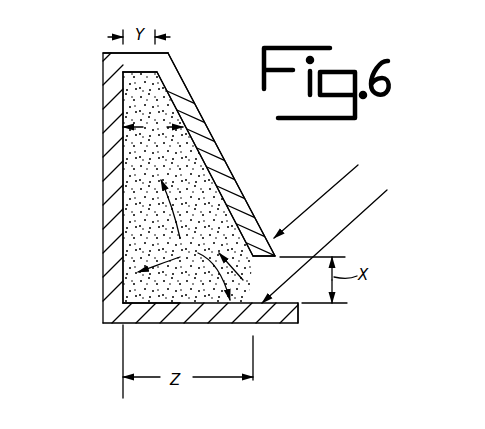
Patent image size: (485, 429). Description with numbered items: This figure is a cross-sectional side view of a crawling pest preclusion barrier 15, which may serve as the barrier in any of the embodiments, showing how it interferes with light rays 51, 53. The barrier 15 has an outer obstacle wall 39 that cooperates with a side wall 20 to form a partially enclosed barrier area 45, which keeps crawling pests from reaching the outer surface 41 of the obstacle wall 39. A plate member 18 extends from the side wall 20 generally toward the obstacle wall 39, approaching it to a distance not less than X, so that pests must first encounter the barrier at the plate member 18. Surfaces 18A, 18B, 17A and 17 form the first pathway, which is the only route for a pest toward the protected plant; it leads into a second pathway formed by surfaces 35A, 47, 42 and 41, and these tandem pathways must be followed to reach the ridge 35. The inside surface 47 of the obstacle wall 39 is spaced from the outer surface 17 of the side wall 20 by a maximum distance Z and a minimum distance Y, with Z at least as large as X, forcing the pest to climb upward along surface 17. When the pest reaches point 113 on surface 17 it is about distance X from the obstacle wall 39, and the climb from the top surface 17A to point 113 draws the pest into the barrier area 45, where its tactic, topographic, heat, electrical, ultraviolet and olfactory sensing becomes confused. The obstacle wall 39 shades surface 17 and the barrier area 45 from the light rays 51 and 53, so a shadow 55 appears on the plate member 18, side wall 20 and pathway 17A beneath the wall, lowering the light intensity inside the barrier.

The barrier 15 is at (194, 193).
The side wall 20 is at (103, 189).
The ridge 35 is at (168, 53).
The surface 35A is at (147, 76).
The outer obstacle wall 39 is at (197, 107).
The outer surface 41 is at (226, 163).
The inside surface 47 is at (225, 203).
The surface 42 is at (266, 258).
The barrier area 45 is at (241, 272).
The outer surface 17 is at (124, 251).
The top surface 17A is at (165, 274).
The shadow 55 is at (188, 187).
The point 113 is at (131, 129).
The light ray 51 is at (340, 180).
The light ray 53 is at (367, 208).
The plate member 18 is at (205, 317).
The surface 18A is at (168, 325).
The surface 18B is at (298, 320).